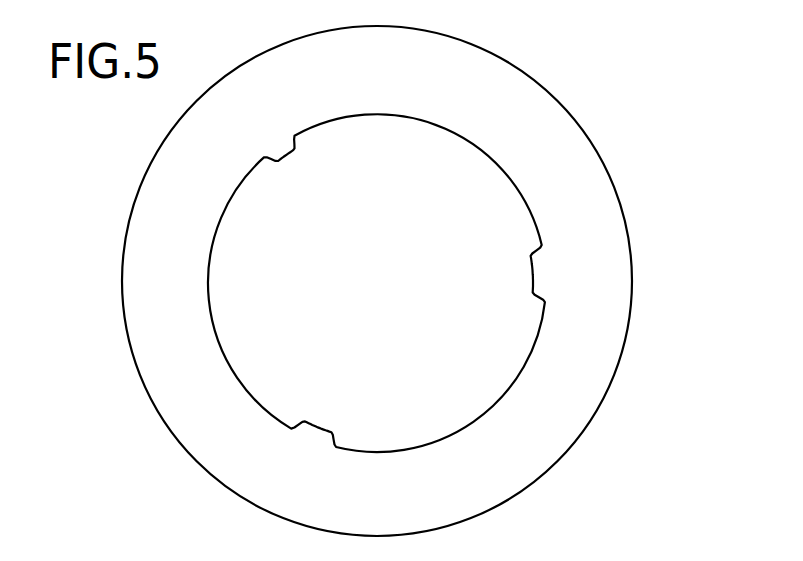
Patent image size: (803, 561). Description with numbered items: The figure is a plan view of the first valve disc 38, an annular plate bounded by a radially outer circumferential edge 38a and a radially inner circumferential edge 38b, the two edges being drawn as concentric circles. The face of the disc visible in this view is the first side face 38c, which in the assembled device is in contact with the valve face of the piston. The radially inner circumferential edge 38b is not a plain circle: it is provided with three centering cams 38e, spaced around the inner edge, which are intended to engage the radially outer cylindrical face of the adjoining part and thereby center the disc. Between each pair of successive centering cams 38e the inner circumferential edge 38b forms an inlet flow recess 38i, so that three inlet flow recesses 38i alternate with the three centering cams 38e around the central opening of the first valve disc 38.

The first valve disc 38 is at (419, 281).
The radially outer circumferential edge 38a is at (600, 160).
The radially inner circumferential edge 38b is at (514, 190).
The first side face 38c is at (607, 313).
The centering cams 38e is at (282, 152).
The inlet flow recesses 38i is at (404, 114).